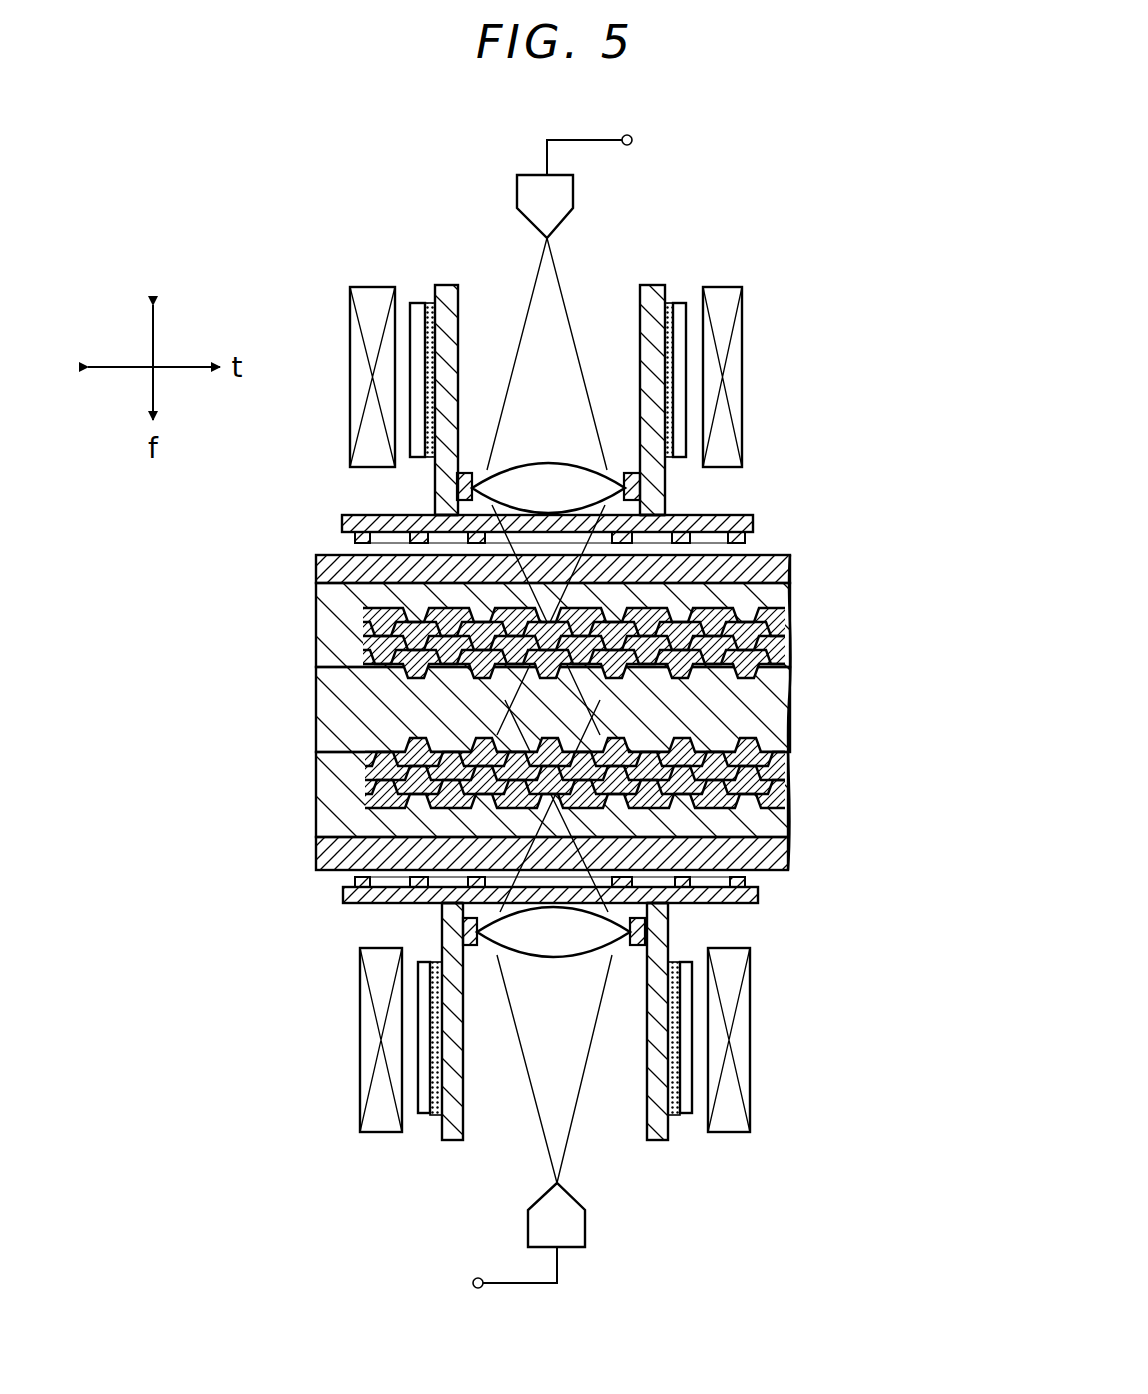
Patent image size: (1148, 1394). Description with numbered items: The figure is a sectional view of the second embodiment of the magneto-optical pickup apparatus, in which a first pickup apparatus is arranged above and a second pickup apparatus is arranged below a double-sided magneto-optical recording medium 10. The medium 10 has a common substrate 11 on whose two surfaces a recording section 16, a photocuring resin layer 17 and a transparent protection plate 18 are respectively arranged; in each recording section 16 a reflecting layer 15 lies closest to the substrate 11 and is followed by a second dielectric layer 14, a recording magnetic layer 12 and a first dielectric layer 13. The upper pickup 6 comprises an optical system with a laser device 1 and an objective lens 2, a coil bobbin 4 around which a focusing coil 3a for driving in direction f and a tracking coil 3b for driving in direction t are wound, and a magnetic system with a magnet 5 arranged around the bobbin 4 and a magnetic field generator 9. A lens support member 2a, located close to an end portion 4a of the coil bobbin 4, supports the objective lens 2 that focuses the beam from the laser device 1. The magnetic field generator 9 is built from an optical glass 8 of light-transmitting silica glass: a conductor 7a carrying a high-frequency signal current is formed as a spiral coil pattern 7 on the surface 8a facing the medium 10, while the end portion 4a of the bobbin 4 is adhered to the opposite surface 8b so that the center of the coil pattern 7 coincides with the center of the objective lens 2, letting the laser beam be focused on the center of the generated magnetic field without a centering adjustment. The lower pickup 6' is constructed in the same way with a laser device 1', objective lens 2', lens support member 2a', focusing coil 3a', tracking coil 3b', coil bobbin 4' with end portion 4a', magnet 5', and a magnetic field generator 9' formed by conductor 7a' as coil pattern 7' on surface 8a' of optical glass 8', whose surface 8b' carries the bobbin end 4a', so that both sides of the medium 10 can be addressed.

The laser device 1 is at (574, 186).
The laser device 1' is at (550, 1235).
The objective lens 2 is at (544, 456).
The objective lens 2' is at (555, 964).
The lens support member 2a is at (541, 460).
The lens support member 2a' is at (631, 977).
The focusing coil 3a is at (562, 325).
The focusing coil 3a' is at (550, 1084).
The tracking coil 3b is at (569, 325).
The tracking coil 3b' is at (554, 1079).
The coil bobbin 4 is at (550, 354).
The coil bobbin 4' is at (552, 1050).
The end portion of the coil bobbin 4a is at (543, 488).
The end portion of the coil bobbin 4a' is at (559, 950).
The magnet 5 is at (549, 377).
The magnet 5' is at (556, 1040).
The pickup 6 is at (558, 475).
The pickup 6' is at (538, 966).
The spiral coil pattern 7 is at (596, 560).
The spiral coil pattern 7' is at (591, 865).
The conductor 7a is at (534, 539).
The conductor 7a' is at (572, 922).
The optical glass 8 is at (549, 501).
The optical glass 8' is at (552, 911).
The surface of the optical glass 8a is at (549, 521).
The surface of the optical glass 8a' is at (550, 899).
The surface of the optical glass 8b is at (549, 498).
The surface of the optical glass 8b' is at (549, 919).
The magnetic field generator 9 is at (770, 377).
The magnetic field generator 9' is at (308, 1039).
The double-sided magneto-optical recording medium 10 is at (536, 712).
The common substrate 11 is at (330, 710).
The recording magnetic layer 12 is at (792, 628).
The first dielectric layer 13 is at (792, 610).
The second dielectric layer 14 is at (792, 650).
The reflecting layer 15 is at (792, 676).
The recording section 16 is at (873, 578).
The photocuring resin layer 17 is at (330, 626).
The transparent protection plate 18 is at (320, 565).